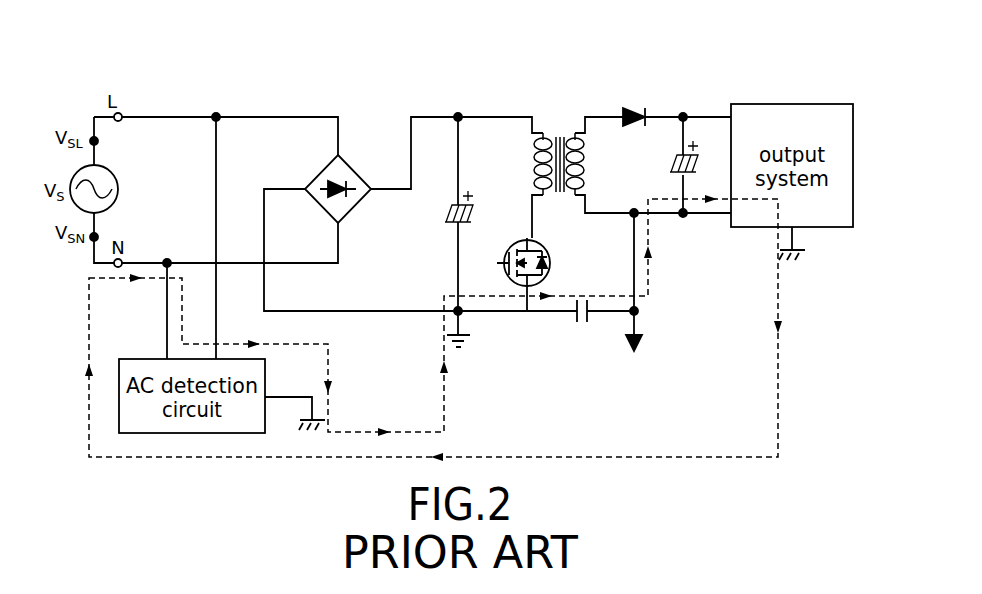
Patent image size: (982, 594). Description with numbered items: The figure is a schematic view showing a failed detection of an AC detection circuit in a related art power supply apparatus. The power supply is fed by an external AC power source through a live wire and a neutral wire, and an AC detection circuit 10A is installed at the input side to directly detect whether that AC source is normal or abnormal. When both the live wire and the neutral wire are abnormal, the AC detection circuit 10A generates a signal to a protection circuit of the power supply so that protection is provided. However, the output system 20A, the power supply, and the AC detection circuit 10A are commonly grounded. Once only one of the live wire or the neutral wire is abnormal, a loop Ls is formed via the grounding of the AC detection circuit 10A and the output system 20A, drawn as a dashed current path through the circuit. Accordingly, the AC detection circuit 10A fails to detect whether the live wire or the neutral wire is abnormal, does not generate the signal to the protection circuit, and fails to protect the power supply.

The AC detection circuit 10A is at (143, 365).
The output system 20A is at (792, 110).
The loop Ls is at (777, 375).